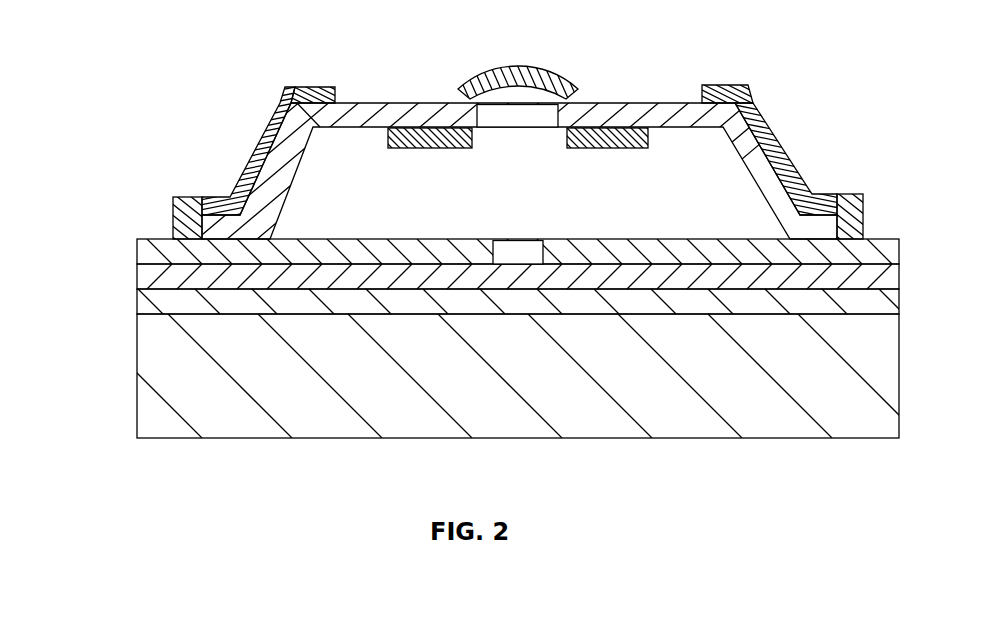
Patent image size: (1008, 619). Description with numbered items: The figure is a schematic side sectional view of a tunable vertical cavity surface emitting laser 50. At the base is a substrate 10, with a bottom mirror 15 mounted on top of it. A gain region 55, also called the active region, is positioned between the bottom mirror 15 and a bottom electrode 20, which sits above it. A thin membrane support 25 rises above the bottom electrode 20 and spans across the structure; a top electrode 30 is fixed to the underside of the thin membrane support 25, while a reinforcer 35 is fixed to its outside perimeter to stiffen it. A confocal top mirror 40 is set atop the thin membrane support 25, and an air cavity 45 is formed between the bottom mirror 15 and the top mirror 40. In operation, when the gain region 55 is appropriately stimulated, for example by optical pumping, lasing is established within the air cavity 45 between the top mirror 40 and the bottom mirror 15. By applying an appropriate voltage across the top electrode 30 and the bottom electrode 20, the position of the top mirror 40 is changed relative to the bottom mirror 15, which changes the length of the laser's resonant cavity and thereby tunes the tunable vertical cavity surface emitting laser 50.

The substrate 10 is at (139, 363).
The bottom mirror 15 is at (139, 303).
The bottom electrode 20 is at (139, 255).
The thin membrane support 25 is at (260, 142).
The top electrode 30 is at (416, 149).
The reinforcer 35 is at (242, 171).
The confocal top mirror 40 is at (502, 66).
The air cavity 45 is at (529, 208).
The tunable vertical cavity surface emitting laser 50 is at (145, 462).
The gain region 55 is at (139, 279).